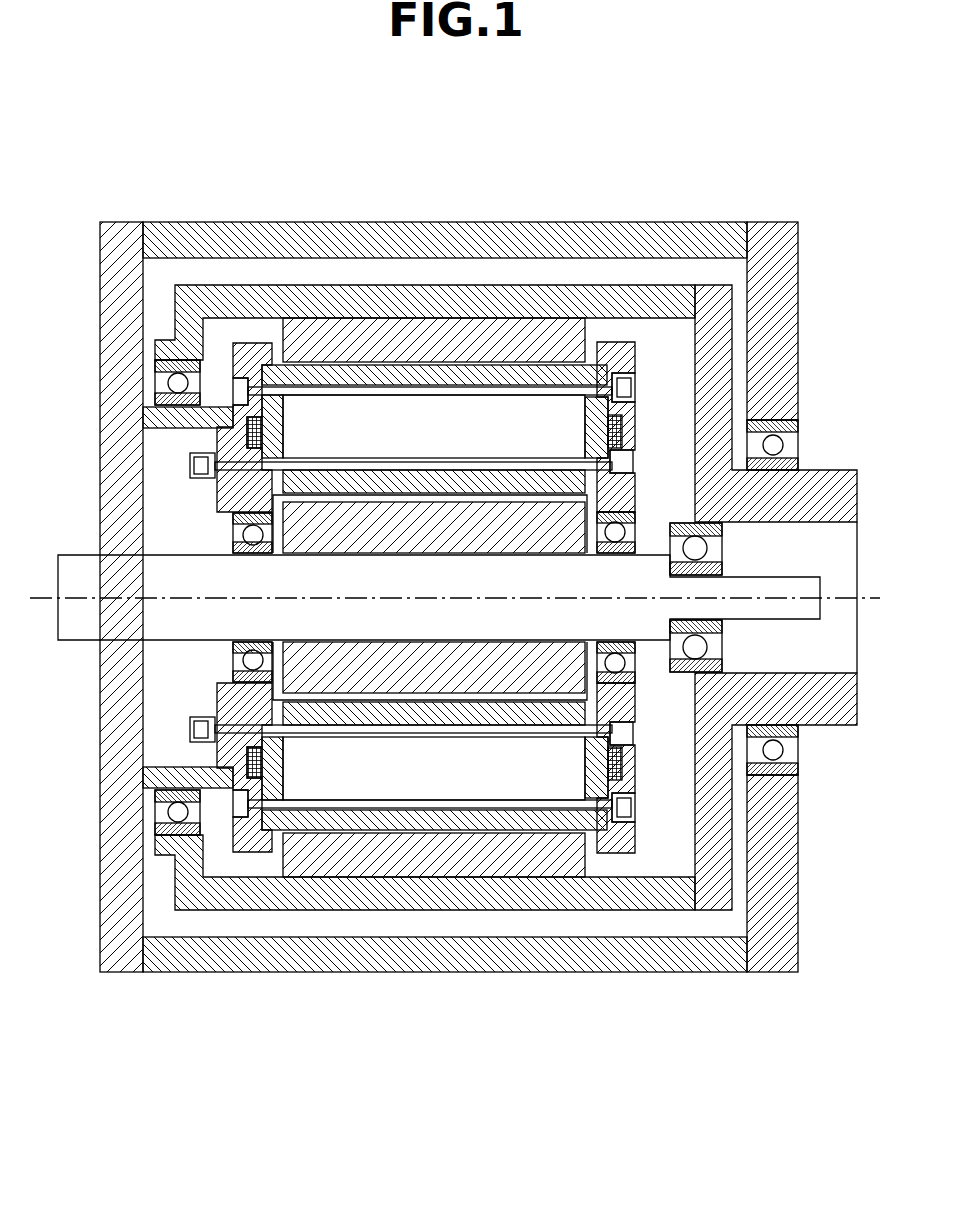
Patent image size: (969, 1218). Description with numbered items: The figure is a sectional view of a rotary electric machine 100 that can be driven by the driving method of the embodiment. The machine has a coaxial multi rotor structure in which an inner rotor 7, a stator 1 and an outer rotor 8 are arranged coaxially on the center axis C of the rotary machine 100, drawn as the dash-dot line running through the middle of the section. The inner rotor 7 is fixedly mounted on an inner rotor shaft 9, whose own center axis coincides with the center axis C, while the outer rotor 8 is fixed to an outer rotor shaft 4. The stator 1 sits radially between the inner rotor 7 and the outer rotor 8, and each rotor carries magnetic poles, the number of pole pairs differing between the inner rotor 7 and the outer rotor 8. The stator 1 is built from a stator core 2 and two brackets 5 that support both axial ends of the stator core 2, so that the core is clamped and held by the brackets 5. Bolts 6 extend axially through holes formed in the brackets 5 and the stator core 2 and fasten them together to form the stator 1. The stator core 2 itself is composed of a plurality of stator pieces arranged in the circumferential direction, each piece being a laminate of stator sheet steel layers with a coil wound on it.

The rotary electric machine 100 is at (634, 976).
The stator 1 is at (270, 868).
The stator core 2 is at (369, 352).
The outer rotor shaft 4 is at (823, 473).
The brackets 5 is at (249, 330).
The bolts 6 is at (637, 388).
The inner rotor 7 is at (350, 543).
The outer rotor 8 is at (489, 325).
The inner rotor shaft 9 is at (122, 622).
The center axis C is at (132, 597).